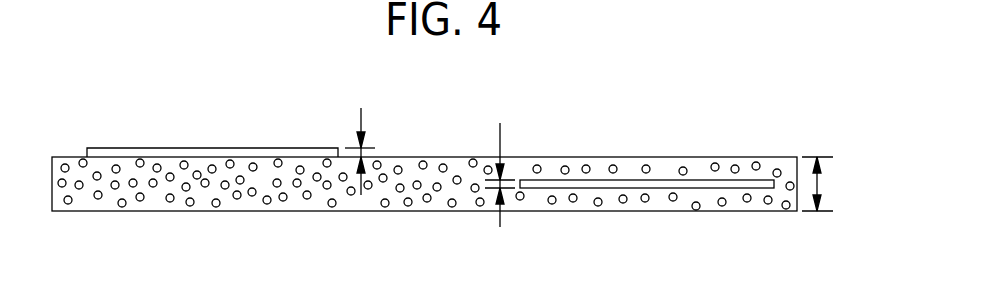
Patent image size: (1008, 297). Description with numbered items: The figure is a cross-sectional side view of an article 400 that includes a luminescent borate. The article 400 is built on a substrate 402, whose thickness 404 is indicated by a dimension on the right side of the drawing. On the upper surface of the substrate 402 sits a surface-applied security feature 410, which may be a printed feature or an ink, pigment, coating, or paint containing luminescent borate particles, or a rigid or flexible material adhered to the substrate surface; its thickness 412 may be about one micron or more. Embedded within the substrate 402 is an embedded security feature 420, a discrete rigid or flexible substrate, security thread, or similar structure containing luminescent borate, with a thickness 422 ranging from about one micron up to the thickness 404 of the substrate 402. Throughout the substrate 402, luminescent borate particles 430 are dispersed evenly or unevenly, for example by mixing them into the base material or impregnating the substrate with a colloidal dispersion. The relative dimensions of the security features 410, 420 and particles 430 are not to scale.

The article 400 is at (169, 101).
The substrate 402 is at (72, 156).
The thickness of the substrate 404 is at (820, 184).
The surface-applied security feature 410 is at (295, 148).
The thickness of the surface-applied security feature 412 is at (362, 119).
The embedded security feature 420 is at (663, 180).
The thickness of the embedded security feature 422 is at (502, 137).
The luminescent borate particles 430 is at (735, 165).